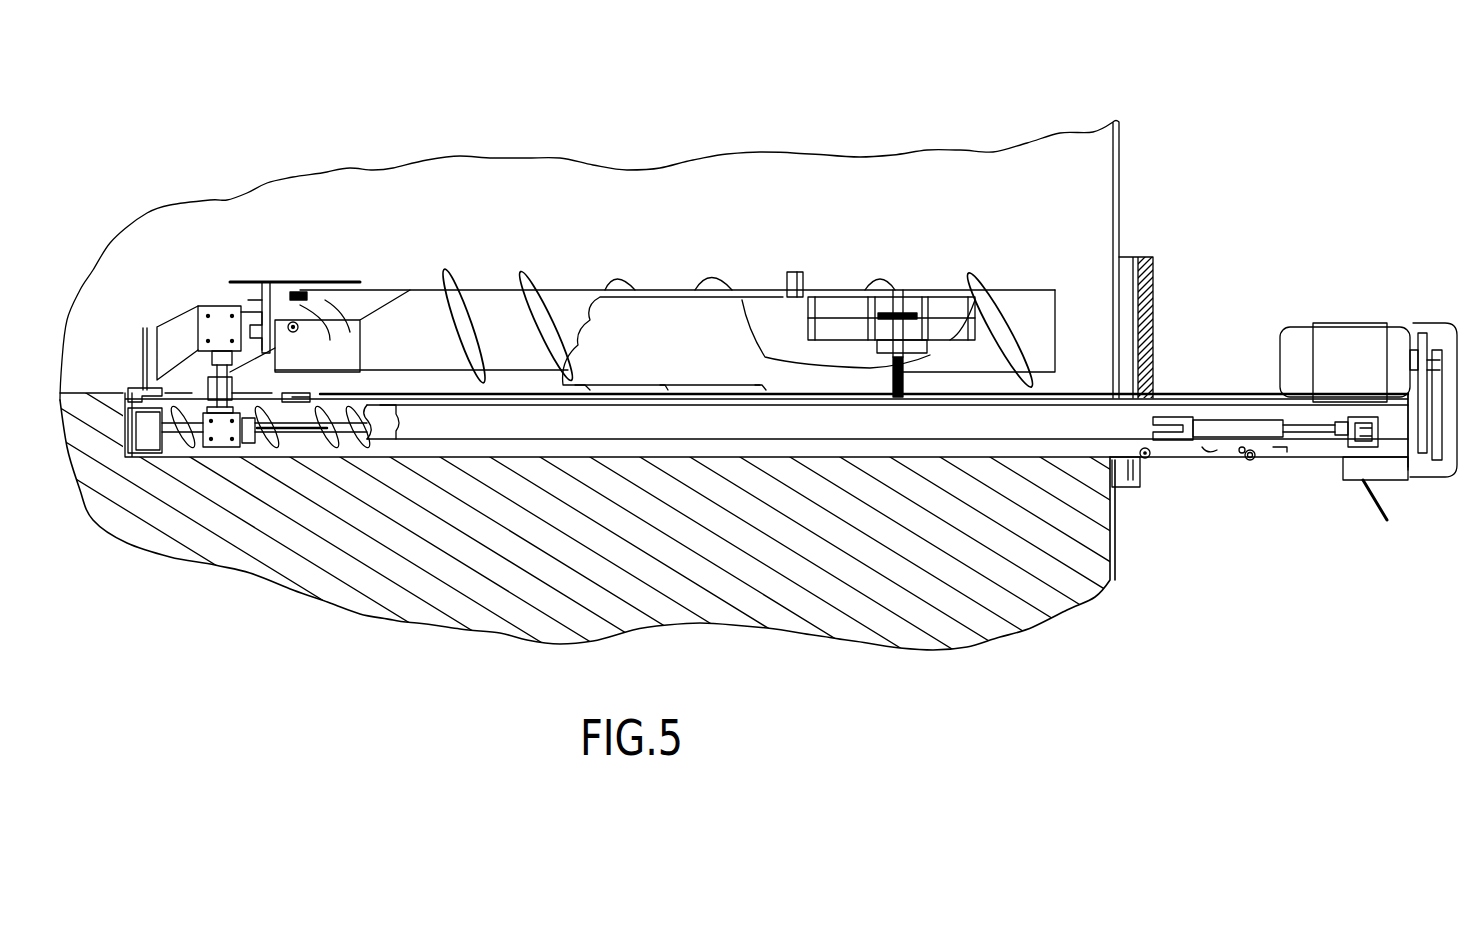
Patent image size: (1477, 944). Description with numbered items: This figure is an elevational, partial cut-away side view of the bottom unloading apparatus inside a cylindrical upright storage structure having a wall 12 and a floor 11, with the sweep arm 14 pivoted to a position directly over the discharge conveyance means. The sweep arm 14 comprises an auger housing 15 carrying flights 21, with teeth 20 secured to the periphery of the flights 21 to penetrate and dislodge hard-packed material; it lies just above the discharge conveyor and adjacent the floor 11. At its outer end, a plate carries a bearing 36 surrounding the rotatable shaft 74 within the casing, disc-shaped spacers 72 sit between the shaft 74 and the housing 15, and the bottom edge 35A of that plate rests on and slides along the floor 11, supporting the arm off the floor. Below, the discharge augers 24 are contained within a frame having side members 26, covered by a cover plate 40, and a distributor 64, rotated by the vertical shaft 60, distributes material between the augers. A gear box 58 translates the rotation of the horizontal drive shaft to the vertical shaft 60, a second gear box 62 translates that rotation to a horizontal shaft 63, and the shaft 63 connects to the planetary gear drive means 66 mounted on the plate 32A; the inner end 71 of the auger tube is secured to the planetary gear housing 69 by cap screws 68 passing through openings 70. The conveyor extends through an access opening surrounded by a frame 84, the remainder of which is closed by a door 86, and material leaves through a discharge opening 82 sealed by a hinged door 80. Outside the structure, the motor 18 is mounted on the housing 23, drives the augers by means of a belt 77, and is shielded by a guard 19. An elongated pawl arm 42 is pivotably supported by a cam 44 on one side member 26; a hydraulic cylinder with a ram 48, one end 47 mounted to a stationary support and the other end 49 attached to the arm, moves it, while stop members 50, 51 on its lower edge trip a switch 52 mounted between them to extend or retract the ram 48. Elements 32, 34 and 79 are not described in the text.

The floor 11 is at (1060, 614).
The wall 12 is at (1120, 180).
The sweep arm 14 is at (568, 290).
The auger housing 15 is at (500, 322).
The power source 18 is at (1328, 335).
The guard 19 is at (1440, 322).
The teeth 20 is at (790, 274).
The flights 21 is at (705, 288).
The housing 23 is at (1163, 398).
The discharge augers 24 is at (337, 428).
The side members 26 is at (410, 443).
The post 32 is at (160, 335).
The plate 32A is at (250, 283).
The plate 34 is at (650, 310).
The bottom edge 35A is at (900, 398).
The bearing 36 is at (905, 313).
The cover plate 40 is at (488, 407).
The pawl arm 42 is at (735, 430).
The cam 44 is at (1150, 460).
The end of cylinder 47 is at (1185, 440).
The ram 48 is at (1315, 432).
The end of cylinder 49 is at (1355, 440).
The stop member 50 is at (1215, 450).
The stop member 51 is at (1280, 448).
The switch 52 is at (1250, 418).
The gear box 58 is at (218, 437).
The vertical shaft 60 is at (240, 420).
The gear box 62 is at (168, 333).
The horizontal shaft 63 is at (222, 333).
The distributor 64 is at (170, 396).
The planetary gear drive means 66 is at (252, 300).
The cap screws 68 is at (300, 322).
The planetary gear housing 69 is at (338, 305).
The openings 70 is at (314, 330).
The inner end of auger tube 71 is at (363, 343).
The spacers 72 is at (942, 297).
The rotatable shaft 74 is at (832, 320).
The belt 77 is at (1430, 480).
The plate 79 is at (1422, 340).
The hinged door 80 is at (1388, 522).
The discharge opening 82 is at (1370, 482).
The frame 84 is at (1122, 265).
The door 86 is at (1148, 283).